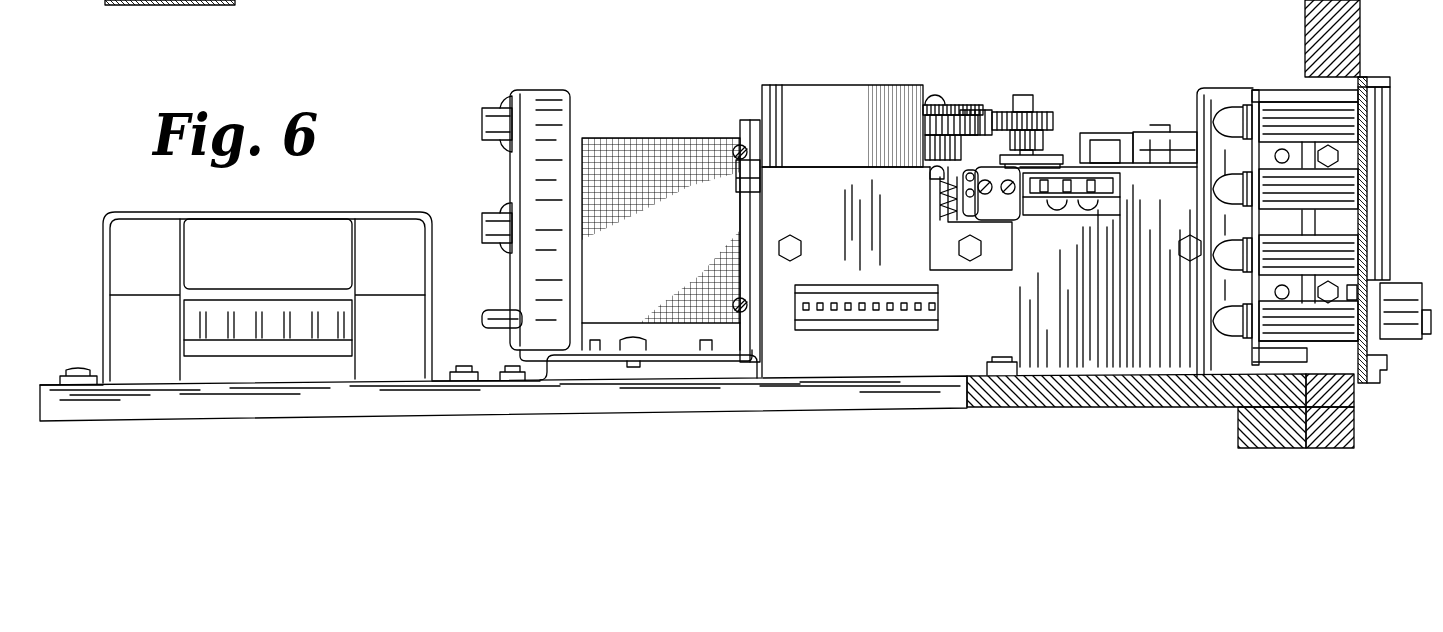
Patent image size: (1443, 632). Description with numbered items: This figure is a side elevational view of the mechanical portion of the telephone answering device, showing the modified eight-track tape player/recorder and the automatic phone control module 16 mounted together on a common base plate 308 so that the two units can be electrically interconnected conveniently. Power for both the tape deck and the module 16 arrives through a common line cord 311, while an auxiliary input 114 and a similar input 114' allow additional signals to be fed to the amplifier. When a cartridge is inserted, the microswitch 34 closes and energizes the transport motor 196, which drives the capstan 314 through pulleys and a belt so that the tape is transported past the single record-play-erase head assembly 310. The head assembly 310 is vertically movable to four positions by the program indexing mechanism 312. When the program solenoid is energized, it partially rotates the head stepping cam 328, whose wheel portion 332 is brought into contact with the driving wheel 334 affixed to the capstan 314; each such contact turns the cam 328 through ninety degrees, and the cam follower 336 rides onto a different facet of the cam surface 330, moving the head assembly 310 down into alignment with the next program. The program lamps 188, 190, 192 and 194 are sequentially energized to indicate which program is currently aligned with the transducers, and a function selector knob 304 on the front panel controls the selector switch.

The automatic phone control module 16 is at (275, 235).
The microswitch 34 is at (1117, 188).
The auxiliary input 114 is at (461, 124).
The shaft 114' is at (468, 212).
The program lamp 188 is at (1330, 340).
The program lamp 190 is at (1345, 255).
The program lamp 192 is at (1350, 185).
The indicator lamp 194 is at (1350, 115).
The transport motor 196 is at (772, 85).
The function selector knob 304 is at (1412, 339).
The base plate 308 is at (722, 408).
The head assembly 310 is at (1082, 164).
The line cord 311 is at (498, 310).
The program indexing mechanism 312 is at (988, 55).
The capstan 314 is at (1050, 156).
The head stepping cam 328 is at (930, 150).
The cam surface 330 is at (944, 180).
The wheel portion 332 is at (985, 120).
The driving wheel 334 is at (1040, 112).
The cam follower 336 is at (932, 177).